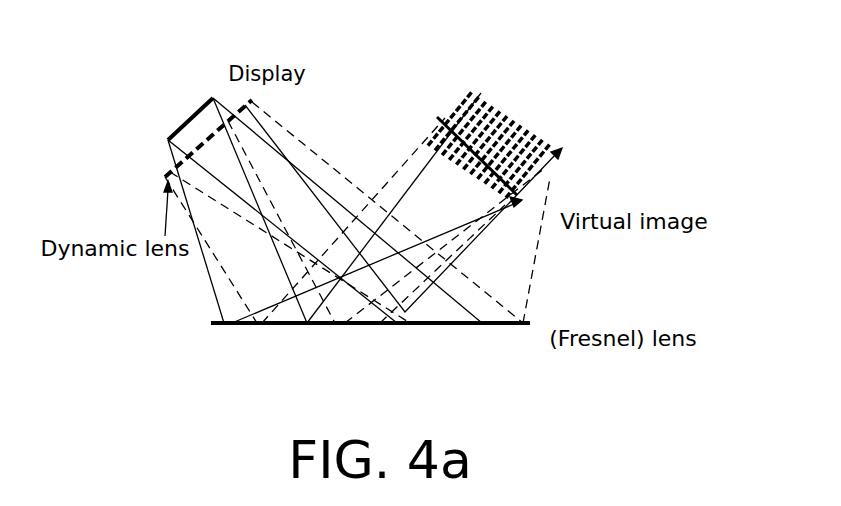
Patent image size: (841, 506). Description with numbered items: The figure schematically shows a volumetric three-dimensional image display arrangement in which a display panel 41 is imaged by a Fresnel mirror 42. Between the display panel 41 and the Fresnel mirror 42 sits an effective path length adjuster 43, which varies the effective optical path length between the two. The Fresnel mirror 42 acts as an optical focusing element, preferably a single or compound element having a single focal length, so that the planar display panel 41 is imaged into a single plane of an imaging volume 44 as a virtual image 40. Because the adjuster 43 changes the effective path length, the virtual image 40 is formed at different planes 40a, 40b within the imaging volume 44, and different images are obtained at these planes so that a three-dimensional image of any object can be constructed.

The virtual image 40 is at (482, 323).
The plane in the imaging volume 40a is at (543, 177).
The plane in the imaging volume 40b is at (548, 168).
The display panel 41 is at (188, 120).
The Fresnel mirror 42 is at (245, 328).
The effective path length adjuster 43 is at (172, 170).
The imaging volume 44 is at (478, 85).